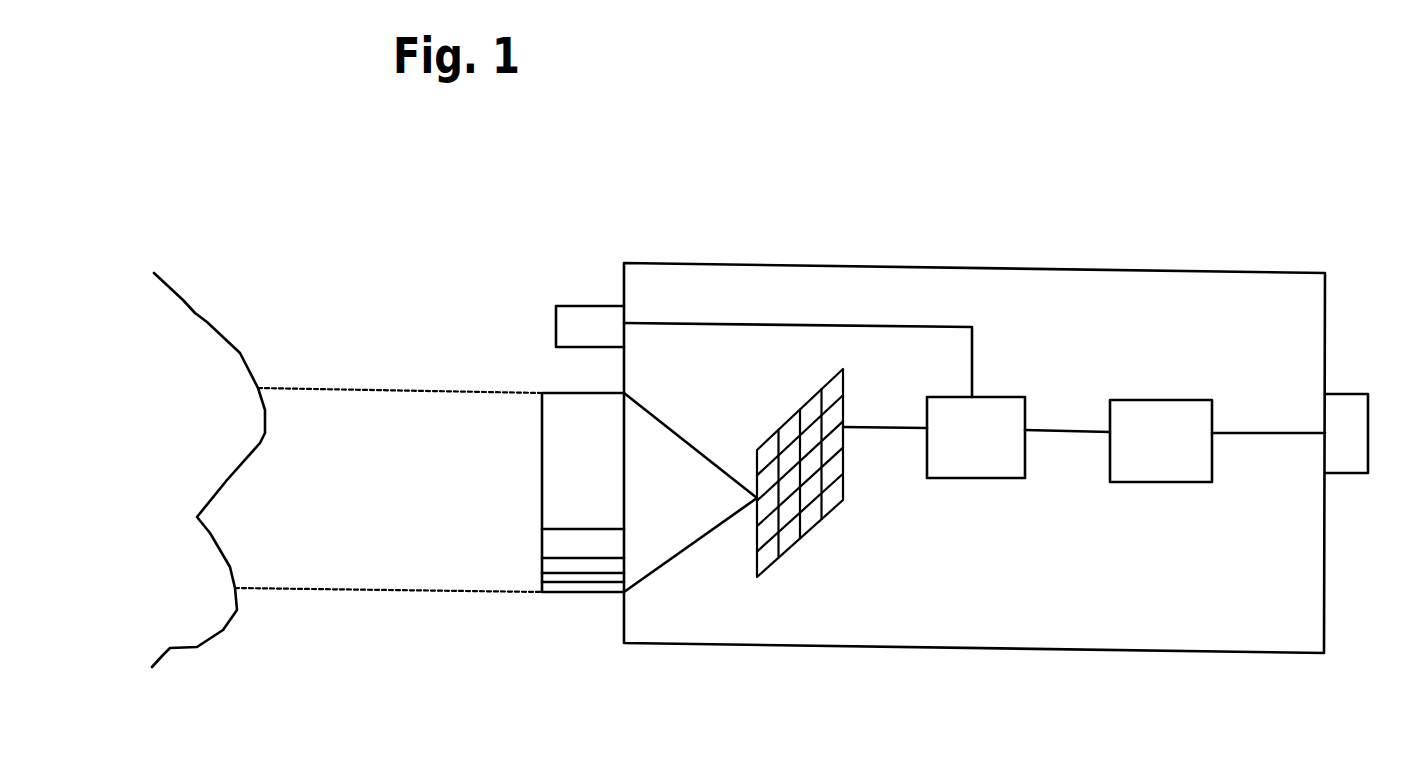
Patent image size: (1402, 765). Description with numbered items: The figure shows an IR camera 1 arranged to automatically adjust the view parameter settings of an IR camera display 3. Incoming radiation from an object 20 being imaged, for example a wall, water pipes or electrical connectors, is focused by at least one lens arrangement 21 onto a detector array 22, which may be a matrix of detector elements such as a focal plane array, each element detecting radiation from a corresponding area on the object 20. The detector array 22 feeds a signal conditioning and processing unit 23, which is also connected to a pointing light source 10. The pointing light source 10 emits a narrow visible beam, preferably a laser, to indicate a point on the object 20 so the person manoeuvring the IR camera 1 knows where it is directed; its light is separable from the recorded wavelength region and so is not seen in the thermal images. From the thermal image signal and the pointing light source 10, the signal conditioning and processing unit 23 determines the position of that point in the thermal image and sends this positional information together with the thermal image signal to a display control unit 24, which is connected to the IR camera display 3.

The IR camera 1 is at (1277, 325).
The IR camera display 3 is at (1360, 394).
The pointing light source 10 is at (586, 306).
The object 20 is at (164, 497).
The lens arrangement 21 is at (552, 592).
The detector array 22 is at (807, 533).
The signal conditioning and processing unit 23 is at (976, 437).
The display control unit 24 is at (1161, 441).